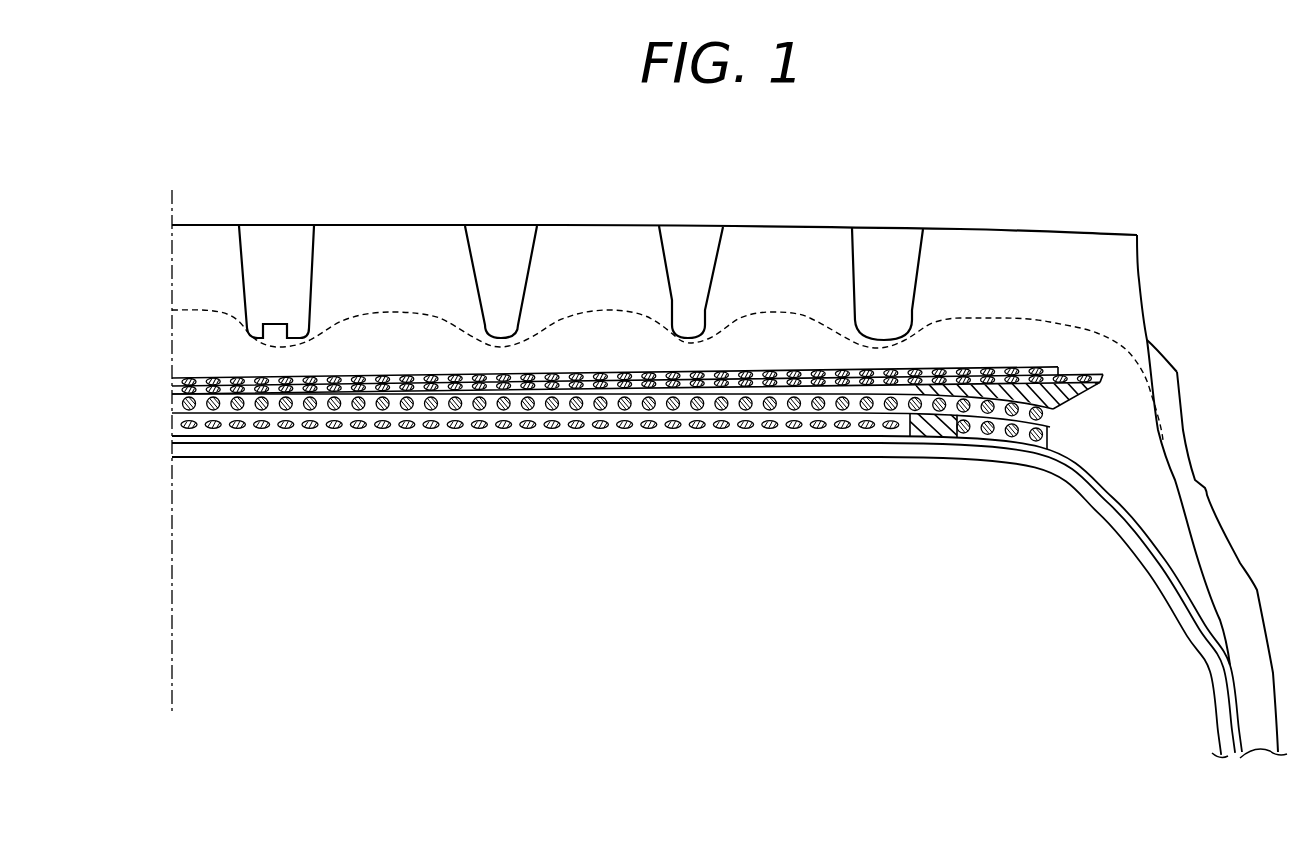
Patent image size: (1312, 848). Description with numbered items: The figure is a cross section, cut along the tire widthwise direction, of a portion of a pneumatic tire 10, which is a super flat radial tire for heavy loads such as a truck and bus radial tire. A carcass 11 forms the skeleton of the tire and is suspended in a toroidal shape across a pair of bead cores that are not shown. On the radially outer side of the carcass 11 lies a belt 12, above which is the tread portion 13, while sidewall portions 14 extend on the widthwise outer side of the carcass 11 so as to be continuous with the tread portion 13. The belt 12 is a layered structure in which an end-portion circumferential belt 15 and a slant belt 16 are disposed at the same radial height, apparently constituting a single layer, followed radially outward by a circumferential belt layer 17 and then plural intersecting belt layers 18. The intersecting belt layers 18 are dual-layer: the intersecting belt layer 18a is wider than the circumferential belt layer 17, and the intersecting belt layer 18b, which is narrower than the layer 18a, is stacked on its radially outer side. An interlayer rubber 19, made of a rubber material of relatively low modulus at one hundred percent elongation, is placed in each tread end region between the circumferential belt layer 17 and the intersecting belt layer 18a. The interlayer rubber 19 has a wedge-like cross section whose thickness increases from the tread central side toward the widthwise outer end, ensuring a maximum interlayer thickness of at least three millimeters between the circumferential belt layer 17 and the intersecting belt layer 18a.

The pneumatic tire 10 is at (748, 202).
The carcass 11 is at (177, 443).
The belt 12 is at (62, 462).
The tread portion 13 is at (383, 225).
The sidewall portion 14 is at (1240, 565).
The end-portion circumferential belt layer 15 is at (1050, 433).
The slant belt layer 16 is at (174, 427).
The circumferential belt layer 17 is at (174, 404).
The intersecting belt layers 18 is at (108, 335).
The intersecting belt layer 18a is at (174, 390).
The intersecting belt layer 18b is at (172, 381).
The interlayer rubber 19 is at (1057, 402).